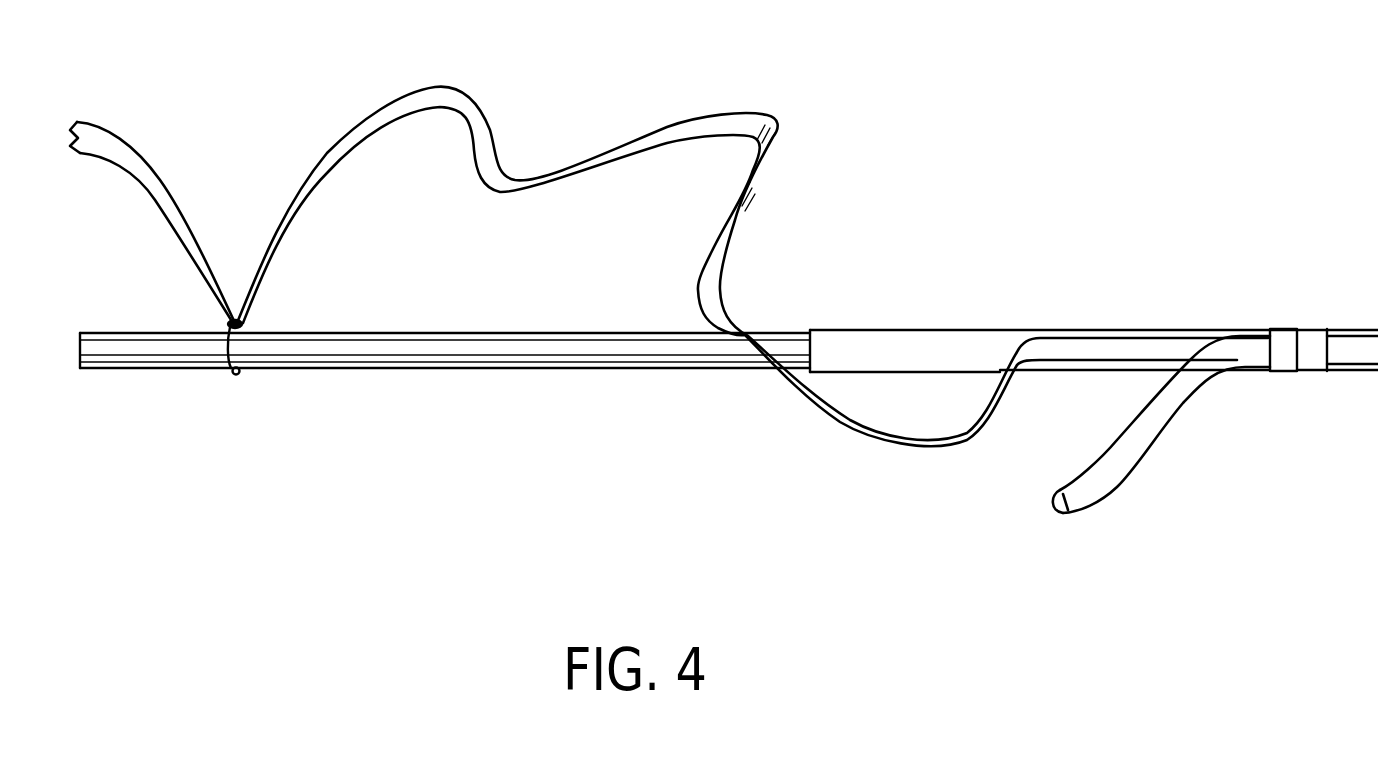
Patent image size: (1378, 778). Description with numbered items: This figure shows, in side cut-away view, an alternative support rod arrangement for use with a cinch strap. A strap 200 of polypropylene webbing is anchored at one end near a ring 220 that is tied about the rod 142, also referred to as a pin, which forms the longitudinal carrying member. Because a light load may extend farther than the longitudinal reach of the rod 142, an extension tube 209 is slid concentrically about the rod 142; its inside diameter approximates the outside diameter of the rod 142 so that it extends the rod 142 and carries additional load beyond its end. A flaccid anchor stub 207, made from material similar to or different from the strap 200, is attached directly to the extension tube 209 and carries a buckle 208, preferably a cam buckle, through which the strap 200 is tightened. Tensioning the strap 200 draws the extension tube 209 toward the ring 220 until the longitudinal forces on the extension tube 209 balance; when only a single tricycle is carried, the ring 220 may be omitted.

The rod 142 is at (485, 347).
The strap 200 is at (428, 95).
The anchor stub 207 is at (1358, 345).
The buckle 208 is at (1287, 357).
The extension tube 209 is at (940, 343).
The ring 220 is at (233, 375).